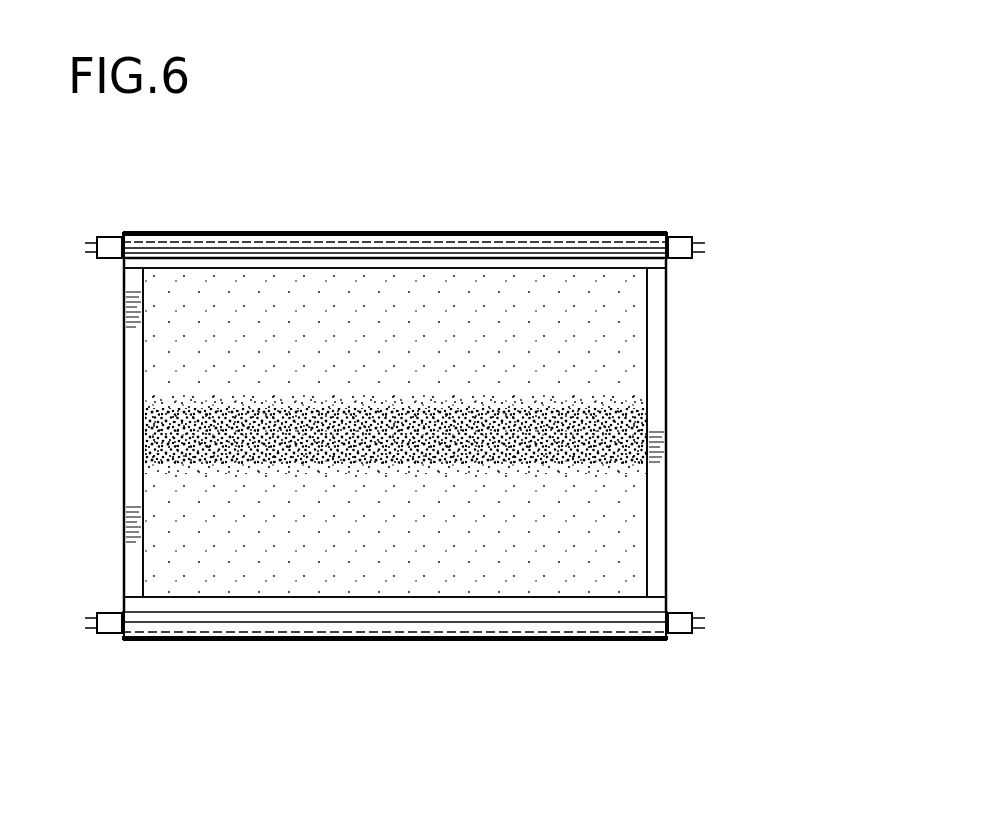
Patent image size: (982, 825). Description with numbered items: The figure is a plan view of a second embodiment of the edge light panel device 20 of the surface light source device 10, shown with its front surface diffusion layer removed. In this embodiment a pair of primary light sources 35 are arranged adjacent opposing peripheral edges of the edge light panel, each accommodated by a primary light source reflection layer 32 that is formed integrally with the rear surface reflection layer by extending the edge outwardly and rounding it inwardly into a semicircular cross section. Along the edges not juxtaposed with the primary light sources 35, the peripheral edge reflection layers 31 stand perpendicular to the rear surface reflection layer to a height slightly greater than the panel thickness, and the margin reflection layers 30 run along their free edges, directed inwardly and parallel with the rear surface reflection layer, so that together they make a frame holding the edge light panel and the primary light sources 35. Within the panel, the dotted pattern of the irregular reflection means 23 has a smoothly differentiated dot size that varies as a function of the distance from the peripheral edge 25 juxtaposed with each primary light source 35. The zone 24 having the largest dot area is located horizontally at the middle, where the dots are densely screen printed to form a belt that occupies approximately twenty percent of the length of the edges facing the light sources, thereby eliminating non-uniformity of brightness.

The surface light source device 10 is at (758, 308).
The edge light panel device 20 is at (667, 291).
The irregular reflection means 23 is at (160, 512).
The densely printed irregular reflection belt 24 is at (665, 444).
The peripheral edge 25 is at (218, 269).
The margin reflection layers 30 is at (131, 428).
The peripheral edge reflection layers 31 is at (124, 355).
The primary light source reflection layer 32 is at (335, 233).
The primary light source 35 is at (527, 250).